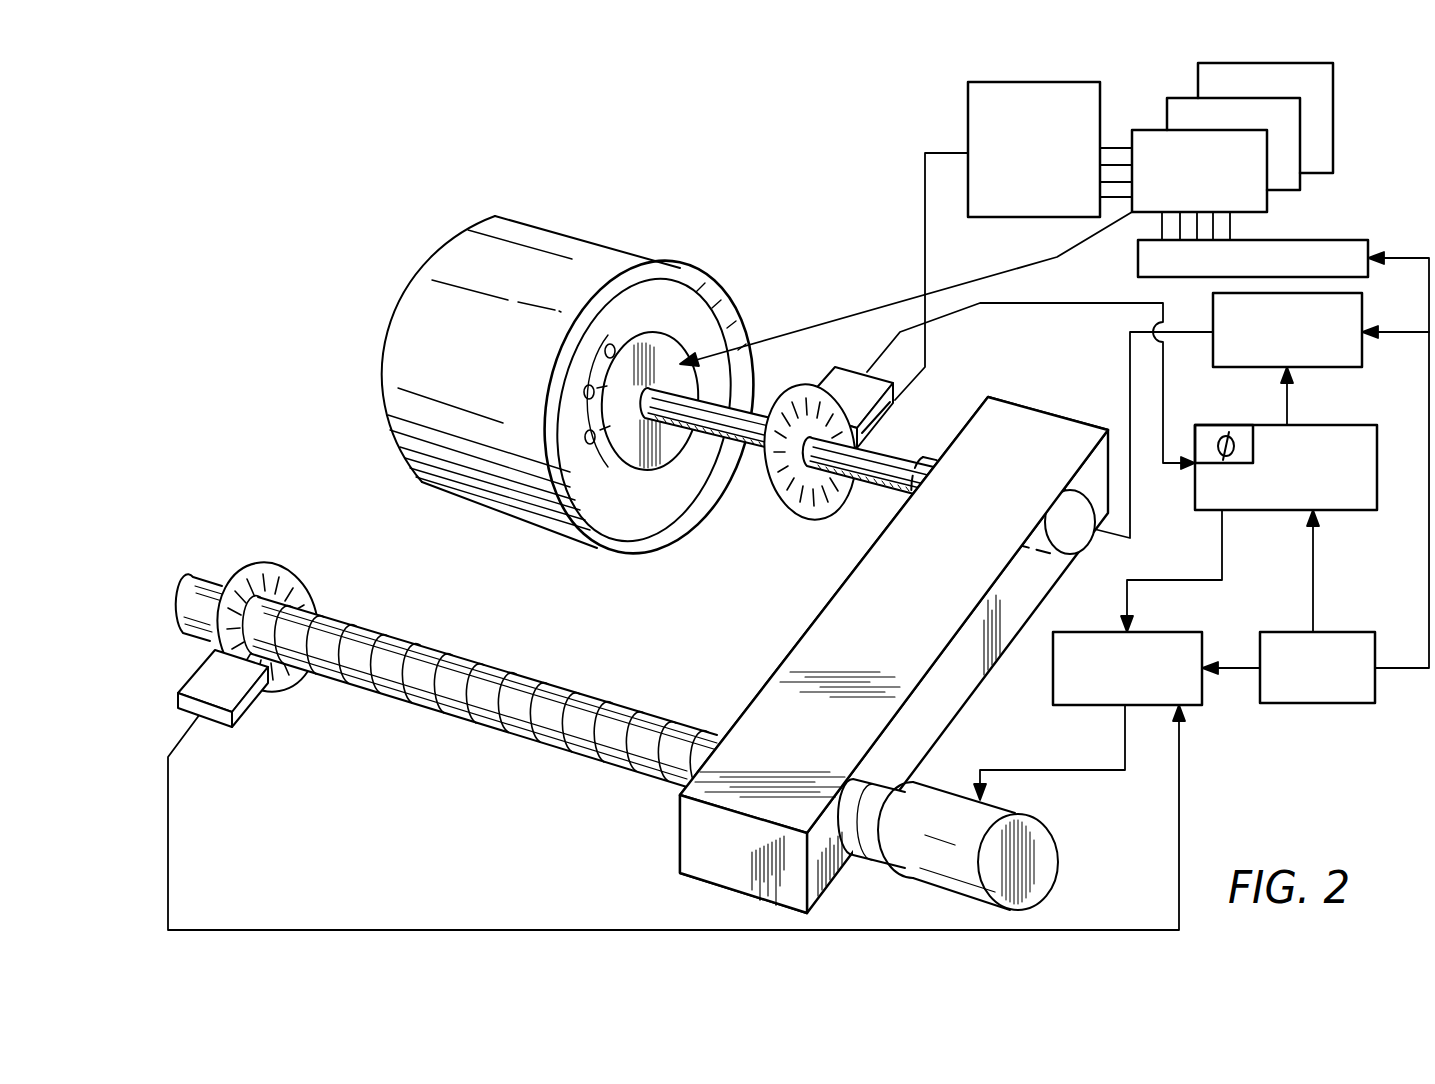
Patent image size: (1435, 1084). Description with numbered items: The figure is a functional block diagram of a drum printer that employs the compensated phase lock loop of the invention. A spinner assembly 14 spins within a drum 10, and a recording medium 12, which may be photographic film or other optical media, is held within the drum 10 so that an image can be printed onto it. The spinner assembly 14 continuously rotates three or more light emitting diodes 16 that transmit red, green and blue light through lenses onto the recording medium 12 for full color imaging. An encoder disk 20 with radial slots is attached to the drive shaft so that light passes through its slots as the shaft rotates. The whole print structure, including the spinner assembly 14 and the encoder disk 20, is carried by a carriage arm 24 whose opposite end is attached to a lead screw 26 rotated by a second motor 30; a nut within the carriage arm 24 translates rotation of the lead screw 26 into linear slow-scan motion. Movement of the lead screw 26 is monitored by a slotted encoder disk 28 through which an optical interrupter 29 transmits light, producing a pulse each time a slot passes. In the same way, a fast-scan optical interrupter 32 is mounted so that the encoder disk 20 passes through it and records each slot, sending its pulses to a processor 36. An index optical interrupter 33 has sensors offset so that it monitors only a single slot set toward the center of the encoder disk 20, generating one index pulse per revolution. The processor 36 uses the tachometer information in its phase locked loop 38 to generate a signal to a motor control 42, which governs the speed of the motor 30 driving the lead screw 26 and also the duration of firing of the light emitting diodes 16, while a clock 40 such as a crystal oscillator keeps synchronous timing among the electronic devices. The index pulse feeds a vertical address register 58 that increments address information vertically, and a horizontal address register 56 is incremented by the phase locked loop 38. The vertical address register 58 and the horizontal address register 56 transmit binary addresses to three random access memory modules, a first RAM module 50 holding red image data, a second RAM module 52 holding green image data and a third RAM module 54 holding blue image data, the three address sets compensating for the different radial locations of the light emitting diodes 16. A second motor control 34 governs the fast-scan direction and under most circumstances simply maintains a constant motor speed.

The drum 10 is at (632, 247).
The recording medium 12 is at (623, 510).
The spinner assembly 14 is at (645, 458).
The light emitting diodes 16 is at (611, 345).
The encoder disk 20 is at (797, 505).
The carriage arm 24 is at (805, 632).
The lead screw 26 is at (446, 669).
The encoder disk 28 is at (302, 586).
The optical interrupter 29 is at (215, 680).
The second motor 30 is at (1045, 835).
The fast-scan optical interrupter 32 is at (835, 370).
The index optical interrupter 33 is at (885, 420).
The second motor control 34 is at (1362, 353).
The processor 36 is at (1352, 425).
The phase locked loop 38 is at (1227, 430).
The clock 40 is at (1340, 632).
The motor control 42 is at (1183, 632).
The first RAM module 50 is at (1267, 205).
The second RAM module 52 is at (1300, 185).
The third RAM module 54 is at (1333, 160).
The horizontal address register 56 is at (1352, 240).
The vertical address register 58 is at (968, 108).